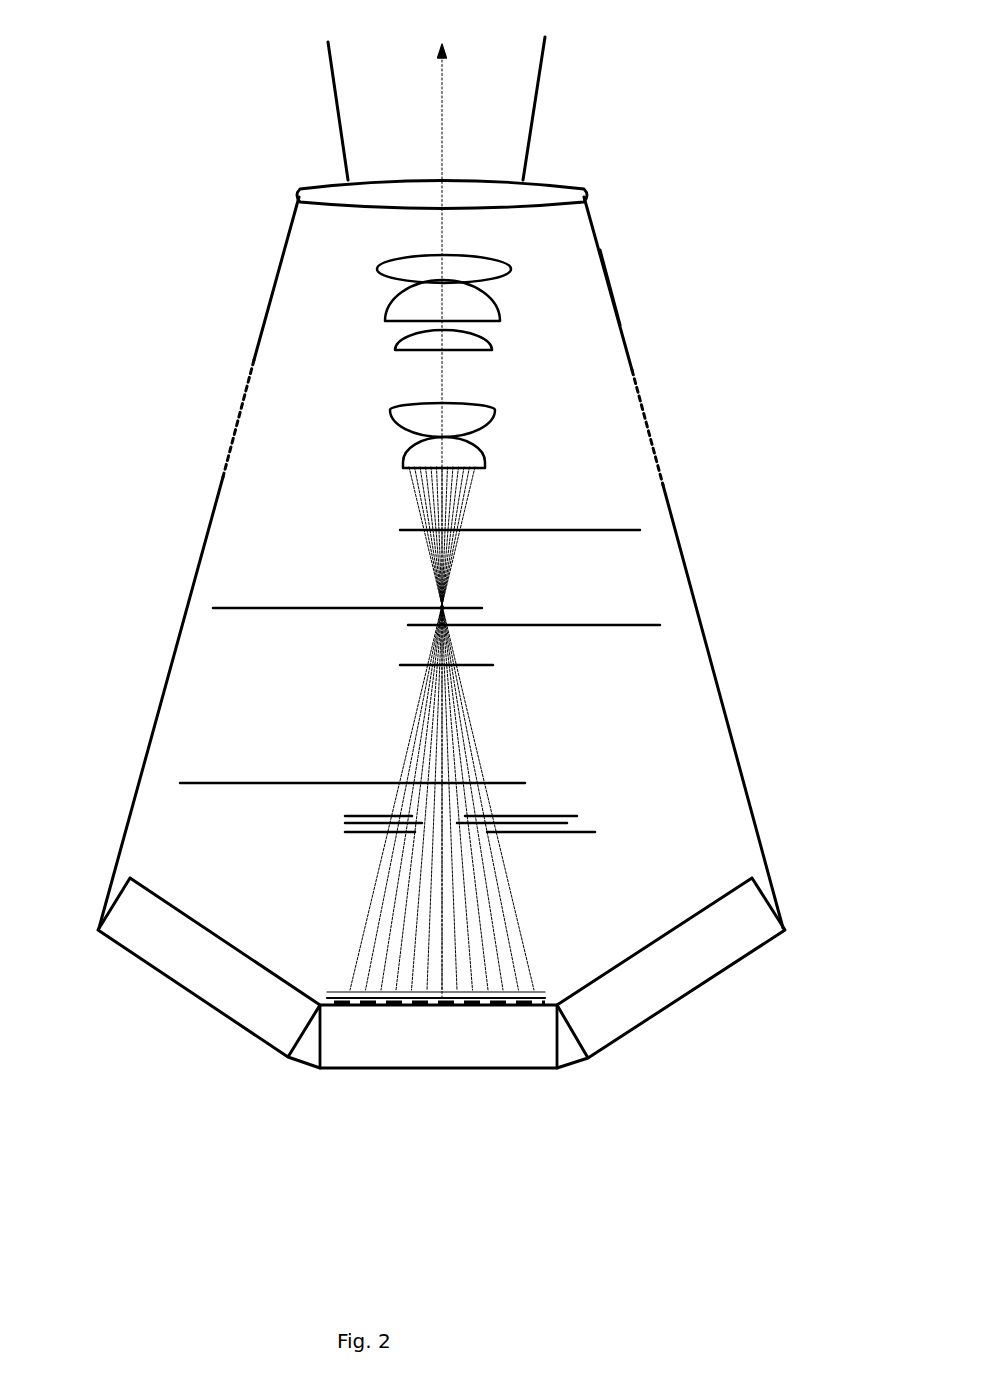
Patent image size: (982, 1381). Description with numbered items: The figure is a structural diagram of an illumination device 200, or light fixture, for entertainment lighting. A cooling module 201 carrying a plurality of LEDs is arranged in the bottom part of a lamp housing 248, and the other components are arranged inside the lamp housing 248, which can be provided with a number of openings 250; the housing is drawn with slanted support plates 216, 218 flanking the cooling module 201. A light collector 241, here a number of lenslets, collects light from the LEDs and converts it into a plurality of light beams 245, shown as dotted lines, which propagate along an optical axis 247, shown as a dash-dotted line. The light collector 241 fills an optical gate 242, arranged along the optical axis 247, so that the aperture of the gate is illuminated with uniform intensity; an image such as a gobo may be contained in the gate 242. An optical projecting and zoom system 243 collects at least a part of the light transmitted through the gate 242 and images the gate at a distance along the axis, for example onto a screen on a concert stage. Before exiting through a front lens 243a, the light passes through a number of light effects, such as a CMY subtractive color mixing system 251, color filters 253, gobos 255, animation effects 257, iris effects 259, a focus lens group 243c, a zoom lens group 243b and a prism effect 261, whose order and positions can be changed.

The illumination device 200 is at (625, 148).
The cooling module 201 is at (422, 1061).
The left stage support plate 216 is at (310, 1047).
The right stage support plate 218 is at (574, 1053).
The light collector 241 is at (515, 1005).
The optical gate 242 is at (478, 614).
The optical projecting and zoom system 243 is at (278, 170).
The front lens 243a is at (360, 192).
The zoom lens group 243b is at (385, 310).
The focus lens group 243c is at (397, 413).
The light beams 245 is at (465, 720).
The optical axis 247 is at (442, 85).
The lamp housing 248 is at (611, 294).
The openings 250 is at (230, 443).
The CMY subtractive color mixing system 251 is at (439, 826).
The color filters 253 is at (352, 761).
The gobos 255 is at (347, 585).
The animation effects 257 is at (534, 646).
The iris effects 259 is at (415, 675).
The prism effect 261 is at (520, 551).